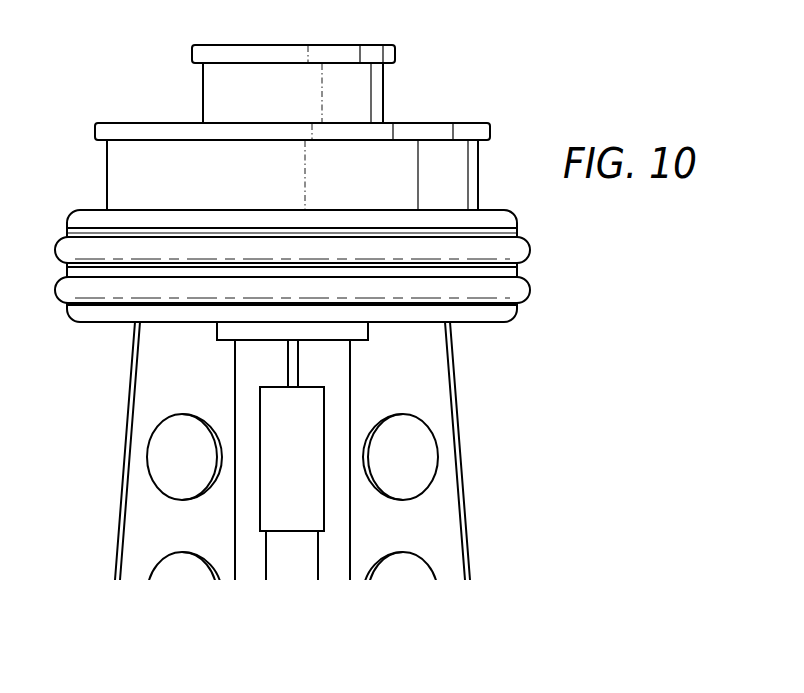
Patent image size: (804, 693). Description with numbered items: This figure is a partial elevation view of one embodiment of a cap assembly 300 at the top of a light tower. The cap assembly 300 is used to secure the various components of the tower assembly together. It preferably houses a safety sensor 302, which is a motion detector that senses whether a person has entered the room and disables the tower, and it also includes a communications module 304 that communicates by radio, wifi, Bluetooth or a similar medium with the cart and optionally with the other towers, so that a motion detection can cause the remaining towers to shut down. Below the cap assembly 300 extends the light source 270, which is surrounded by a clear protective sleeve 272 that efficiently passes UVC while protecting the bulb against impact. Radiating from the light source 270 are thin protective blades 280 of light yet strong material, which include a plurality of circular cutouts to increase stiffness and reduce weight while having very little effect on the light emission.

The cap assembly 300 is at (470, 90).
The safety sensor 302 is at (202, 93).
The communications module 304 is at (107, 185).
The protective blades 280 is at (458, 410).
The protective sleeve 272 is at (248, 572).
The light source 270 is at (293, 563).